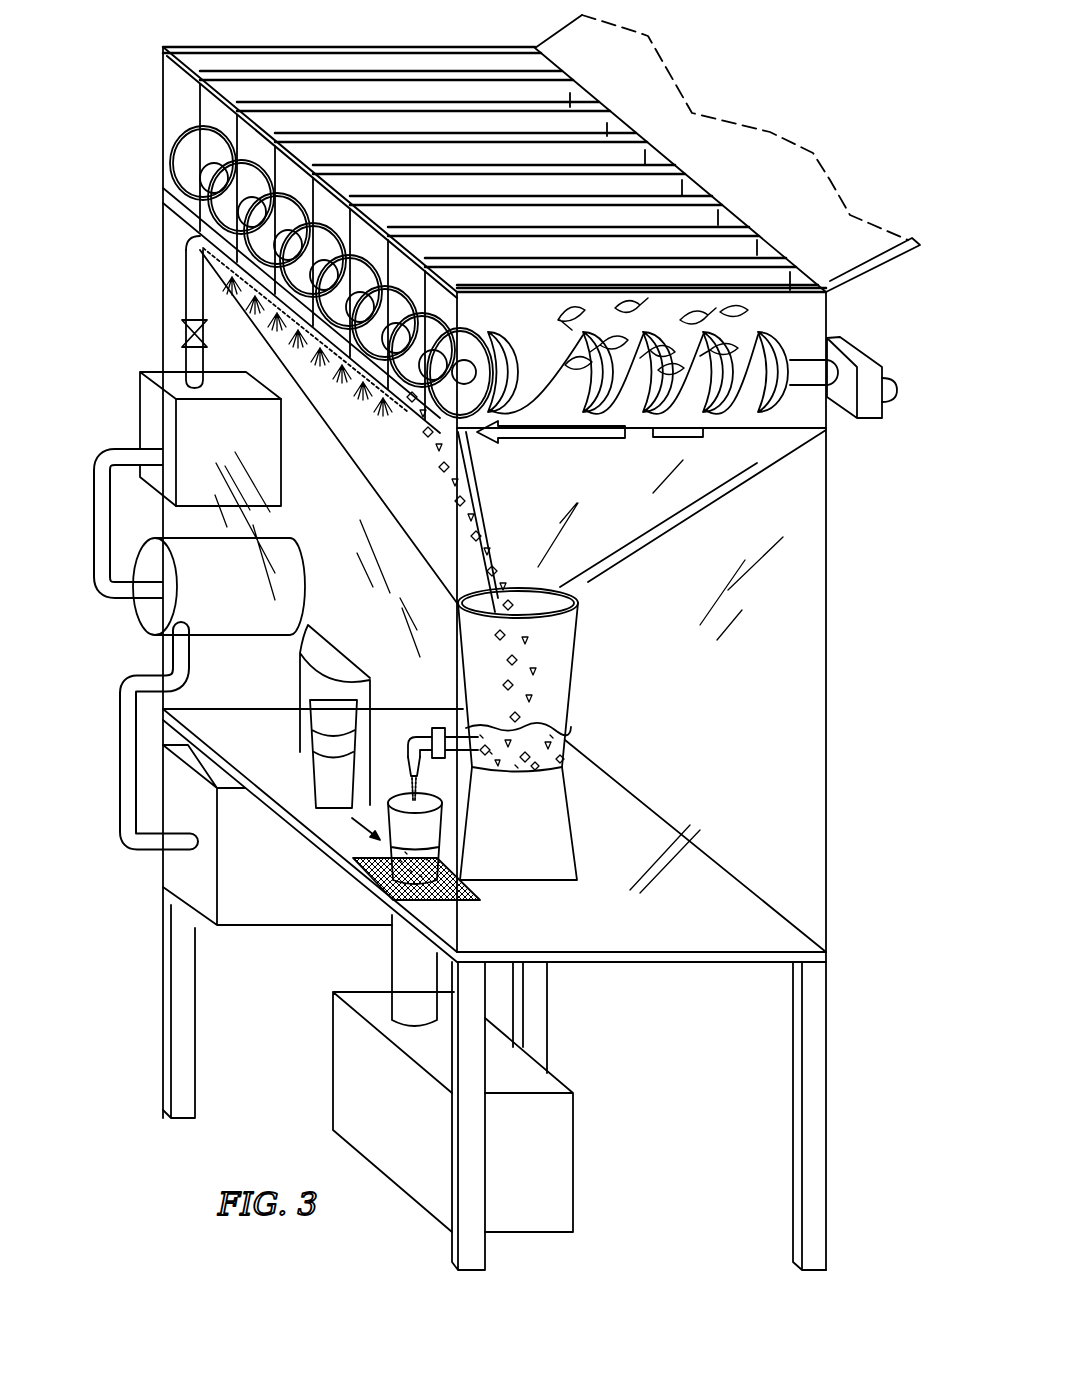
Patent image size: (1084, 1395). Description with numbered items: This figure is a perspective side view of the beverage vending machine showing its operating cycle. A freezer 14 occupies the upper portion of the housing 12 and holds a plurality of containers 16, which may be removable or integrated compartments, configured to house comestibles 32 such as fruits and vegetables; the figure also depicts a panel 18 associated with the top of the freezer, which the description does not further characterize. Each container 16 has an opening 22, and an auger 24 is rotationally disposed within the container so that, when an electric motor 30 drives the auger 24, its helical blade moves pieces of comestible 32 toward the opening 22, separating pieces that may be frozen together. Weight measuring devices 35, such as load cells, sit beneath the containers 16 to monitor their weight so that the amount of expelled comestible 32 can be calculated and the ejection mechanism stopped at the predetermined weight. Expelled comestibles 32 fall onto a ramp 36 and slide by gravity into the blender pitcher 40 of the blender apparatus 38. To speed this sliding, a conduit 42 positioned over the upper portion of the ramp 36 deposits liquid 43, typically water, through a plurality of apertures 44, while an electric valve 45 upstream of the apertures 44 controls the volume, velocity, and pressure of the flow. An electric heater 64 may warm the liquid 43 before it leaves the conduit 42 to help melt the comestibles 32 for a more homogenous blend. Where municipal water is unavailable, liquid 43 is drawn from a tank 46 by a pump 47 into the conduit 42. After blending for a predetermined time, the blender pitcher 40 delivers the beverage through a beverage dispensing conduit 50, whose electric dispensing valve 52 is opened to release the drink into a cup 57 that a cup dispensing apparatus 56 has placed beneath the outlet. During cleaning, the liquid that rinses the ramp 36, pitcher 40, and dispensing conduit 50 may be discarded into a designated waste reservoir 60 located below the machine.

The housing 12 is at (828, 547).
The freezer 14 is at (325, 47).
The containers 16 is at (547, 98).
The access lid 18 is at (753, 155).
The opening 22 is at (415, 428).
The auger 24 is at (772, 398).
The electric motor 30 is at (865, 350).
The comestibles 32 is at (703, 310).
The weight measuring devices 35 is at (670, 442).
The ramp 36 is at (390, 465).
The blender apparatus 38 is at (570, 828).
The blender pitcher 40 is at (578, 672).
The conduit 42 is at (185, 300).
The liquid 43 is at (335, 434).
The apertures 44 is at (298, 347).
The electric valve 45 is at (180, 335).
The tank 46 is at (267, 917).
The pump 47 is at (150, 617).
The beverage dispensing conduit 50 is at (408, 752).
The electric dispensing valve 52 is at (433, 728).
The cup dispensing apparatus 56 is at (300, 673).
The cup 57 is at (422, 822).
The waste reservoir 60 is at (573, 1142).
The electric heater 64 is at (150, 413).